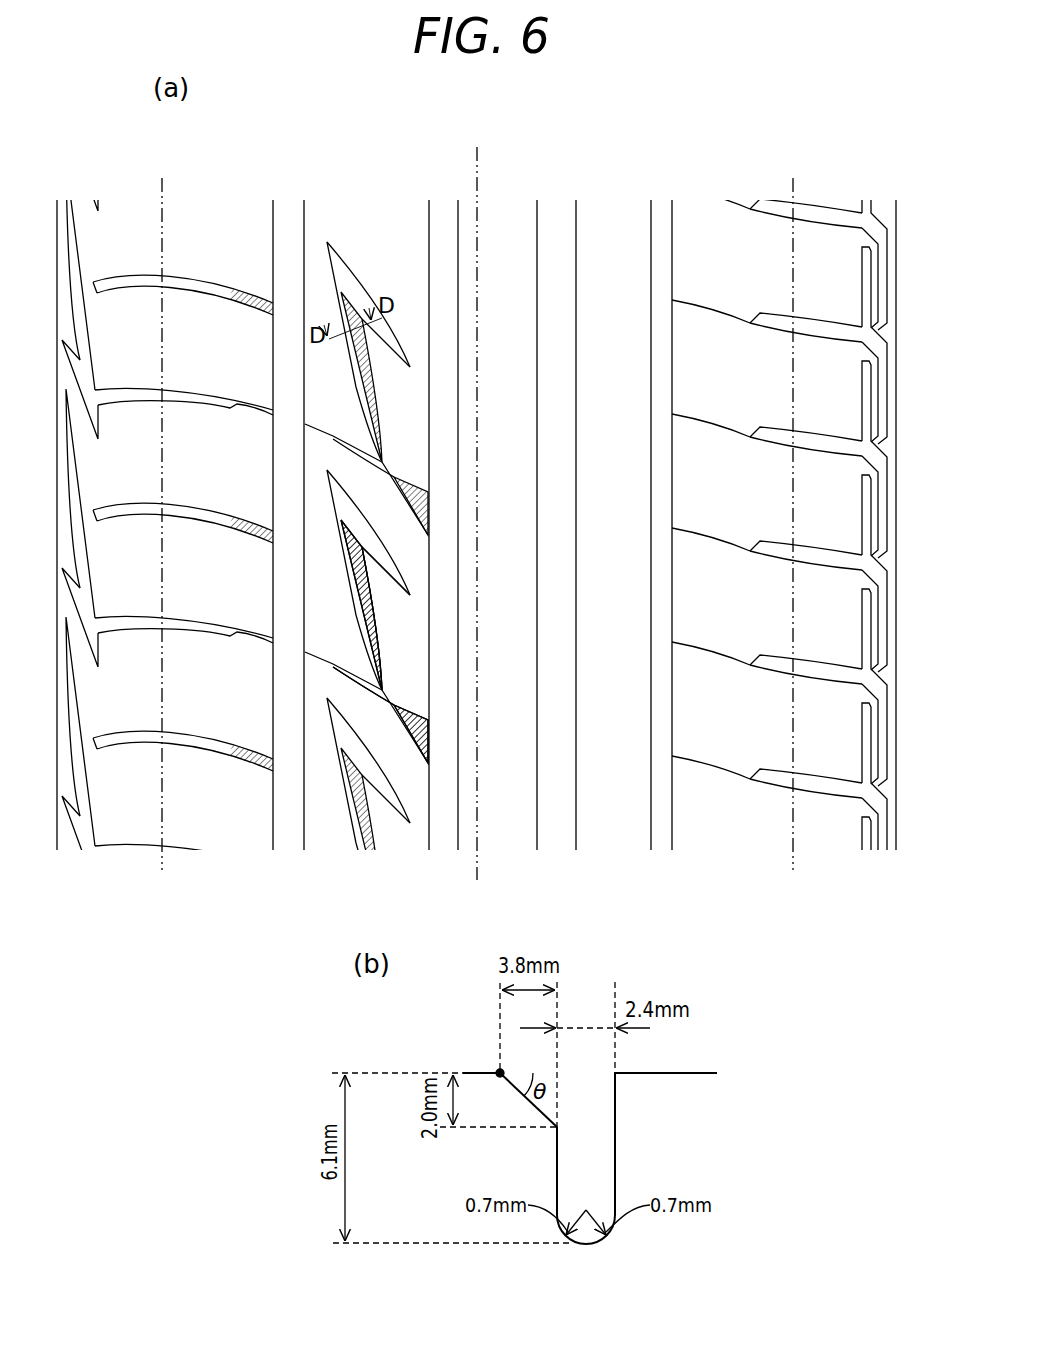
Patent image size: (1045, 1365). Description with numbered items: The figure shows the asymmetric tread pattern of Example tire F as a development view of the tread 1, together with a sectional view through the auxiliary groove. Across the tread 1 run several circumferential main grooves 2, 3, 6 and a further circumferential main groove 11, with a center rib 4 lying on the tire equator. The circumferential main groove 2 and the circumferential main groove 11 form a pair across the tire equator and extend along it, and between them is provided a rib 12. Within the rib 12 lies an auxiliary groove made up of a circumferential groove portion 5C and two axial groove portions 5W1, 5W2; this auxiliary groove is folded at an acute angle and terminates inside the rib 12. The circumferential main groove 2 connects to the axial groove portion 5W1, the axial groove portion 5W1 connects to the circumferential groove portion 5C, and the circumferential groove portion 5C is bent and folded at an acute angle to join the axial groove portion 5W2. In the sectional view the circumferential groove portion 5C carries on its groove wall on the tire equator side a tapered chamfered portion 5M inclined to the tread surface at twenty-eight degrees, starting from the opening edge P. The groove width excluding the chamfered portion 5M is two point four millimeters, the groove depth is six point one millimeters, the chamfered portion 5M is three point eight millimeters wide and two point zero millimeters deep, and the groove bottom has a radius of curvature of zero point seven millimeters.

The tread 1 is at (843, 148).
The circumferential main groove 2 is at (442, 218).
The circumferential main groove 3 is at (553, 218).
The center rib 4 is at (508, 813).
The circumferential main groove 6 is at (659, 213).
The circumferential main groove 11 is at (287, 220).
The rib 12 is at (393, 838).
The axial groove portion 5W1 is at (393, 708).
The axial groove portion 5W2 is at (368, 547).
The circumferential groove portion 5C is at (360, 597).
The chamfered portion 5M is at (537, 1110).
The opening edge P is at (497, 1071).